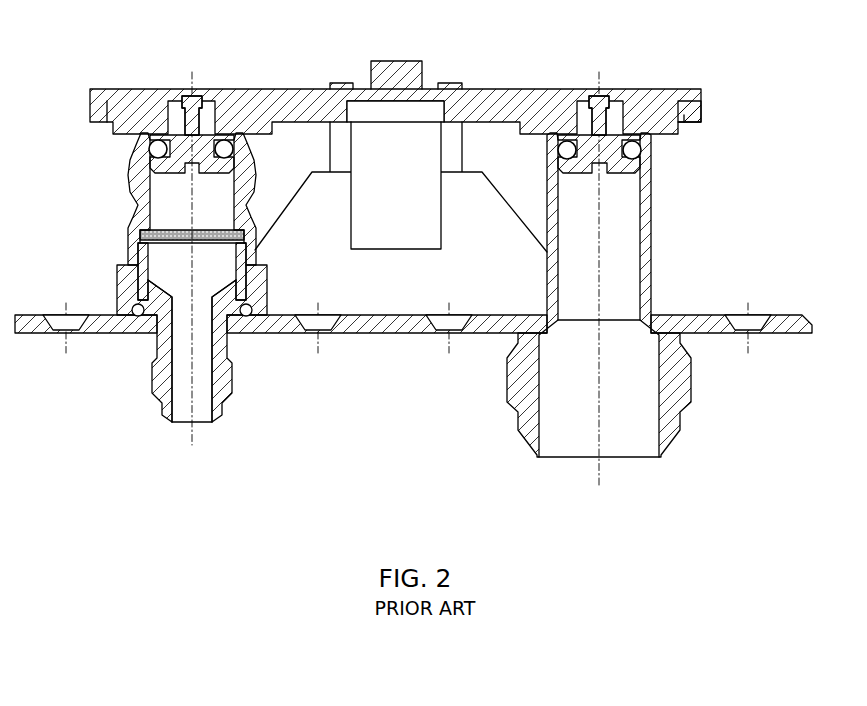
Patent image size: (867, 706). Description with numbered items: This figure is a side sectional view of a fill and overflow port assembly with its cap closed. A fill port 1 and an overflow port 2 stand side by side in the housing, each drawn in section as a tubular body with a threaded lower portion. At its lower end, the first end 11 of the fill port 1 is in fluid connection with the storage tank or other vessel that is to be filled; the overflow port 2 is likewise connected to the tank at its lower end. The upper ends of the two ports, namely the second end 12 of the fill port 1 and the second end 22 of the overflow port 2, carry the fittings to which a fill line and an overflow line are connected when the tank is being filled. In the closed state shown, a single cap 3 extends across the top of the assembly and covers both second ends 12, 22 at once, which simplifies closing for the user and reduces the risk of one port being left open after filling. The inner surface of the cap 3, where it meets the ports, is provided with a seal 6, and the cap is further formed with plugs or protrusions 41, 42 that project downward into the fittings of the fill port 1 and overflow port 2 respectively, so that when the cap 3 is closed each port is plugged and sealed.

The fill port 1 is at (152, 378).
The first end of the fill port 11 is at (202, 423).
The second end of the fill port 12 is at (175, 158).
The plug or protrusion 41 is at (165, 168).
The overflow port 2 is at (682, 390).
The second end of the overflow port 22 is at (612, 150).
The plug or protrusion 42 is at (637, 173).
The cap 3 is at (683, 120).
The seal 6 is at (525, 98).